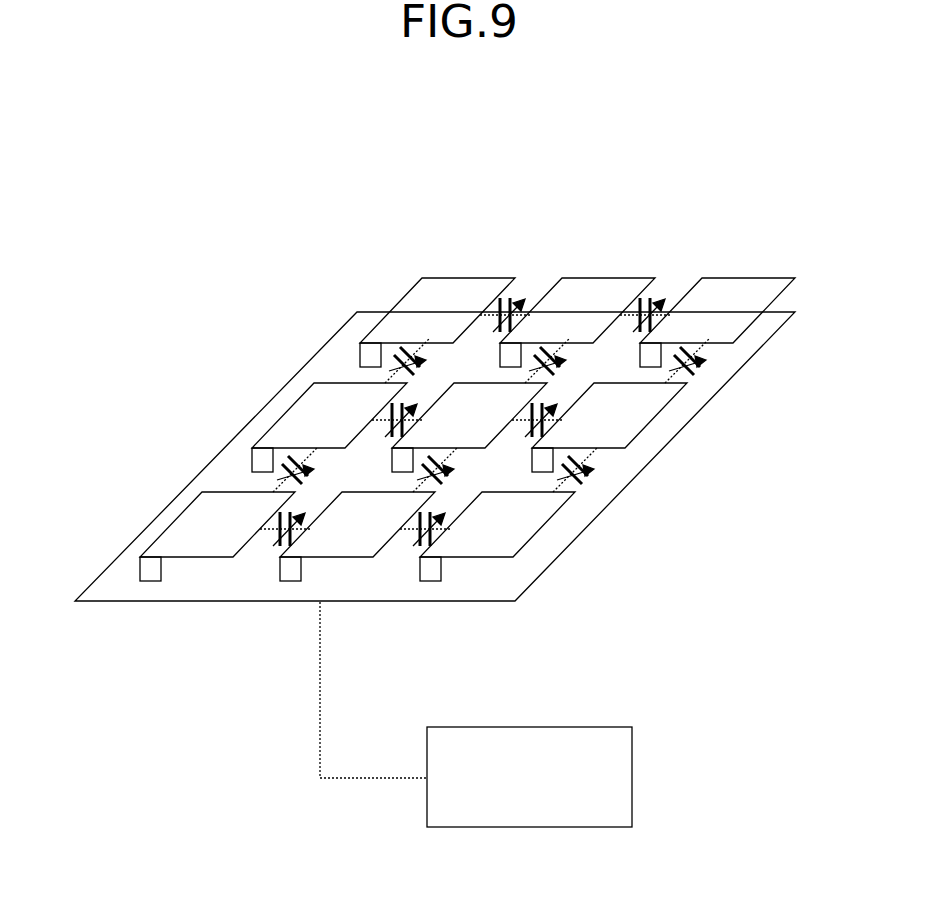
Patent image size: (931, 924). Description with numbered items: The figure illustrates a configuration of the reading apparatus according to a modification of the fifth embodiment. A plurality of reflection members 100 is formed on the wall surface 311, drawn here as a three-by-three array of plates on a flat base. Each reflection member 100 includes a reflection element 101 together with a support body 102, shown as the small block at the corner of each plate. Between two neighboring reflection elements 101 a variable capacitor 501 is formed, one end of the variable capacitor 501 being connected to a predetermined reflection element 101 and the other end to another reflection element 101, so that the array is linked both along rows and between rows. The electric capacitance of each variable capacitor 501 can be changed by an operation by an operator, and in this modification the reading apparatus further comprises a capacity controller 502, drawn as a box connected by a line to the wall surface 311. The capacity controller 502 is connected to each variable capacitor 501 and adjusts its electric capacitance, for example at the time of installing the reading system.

The reflection member 100 is at (467, 467).
The reflection element 101 is at (533, 540).
The support body 102 is at (442, 581).
The wall surface 311 is at (215, 602).
The variable capacitor 501 is at (588, 485).
The capacity controller 502 is at (528, 828).